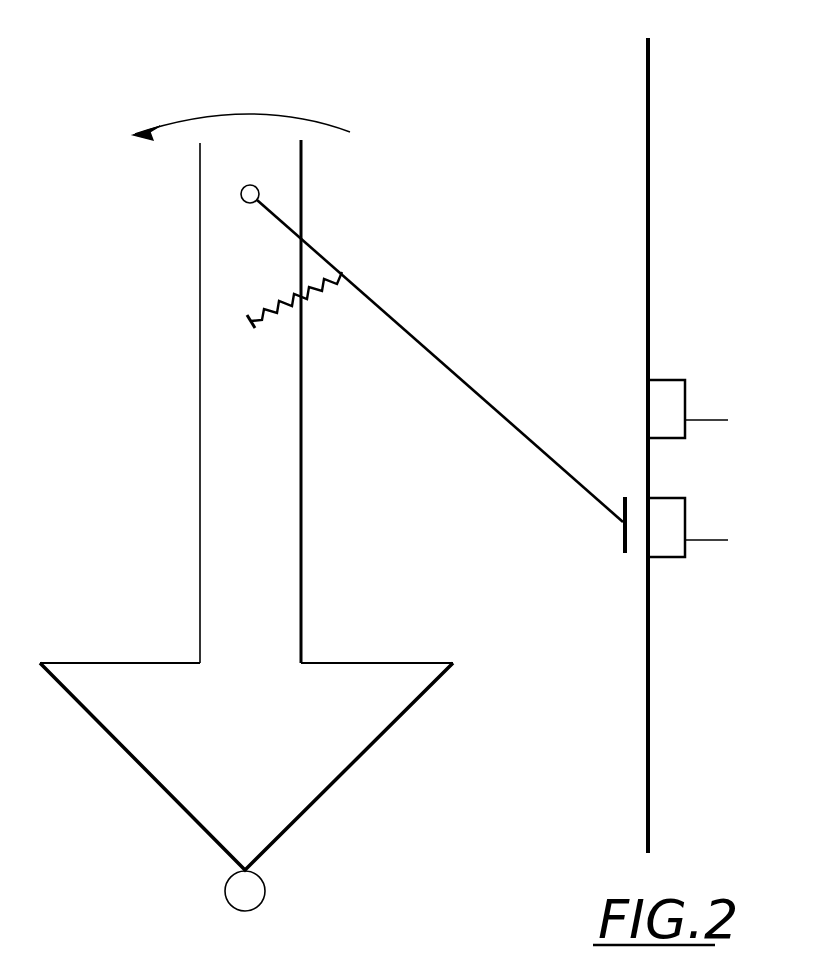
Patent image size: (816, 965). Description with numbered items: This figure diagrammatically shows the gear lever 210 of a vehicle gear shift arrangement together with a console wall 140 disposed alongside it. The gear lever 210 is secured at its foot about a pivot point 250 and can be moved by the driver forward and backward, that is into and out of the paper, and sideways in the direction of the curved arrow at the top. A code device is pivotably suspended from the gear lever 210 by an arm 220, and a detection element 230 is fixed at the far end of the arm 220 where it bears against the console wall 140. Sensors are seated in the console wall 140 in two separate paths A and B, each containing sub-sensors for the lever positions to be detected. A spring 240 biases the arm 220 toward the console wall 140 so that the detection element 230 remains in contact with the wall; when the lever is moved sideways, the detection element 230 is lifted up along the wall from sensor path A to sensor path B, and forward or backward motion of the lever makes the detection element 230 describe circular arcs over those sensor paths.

The console wall 140 is at (648, 85).
The gear lever 210 is at (200, 560).
The arm 220 is at (460, 378).
The detection element 230 is at (623, 546).
The spring 240 is at (315, 294).
The pivot point 250 is at (265, 882).